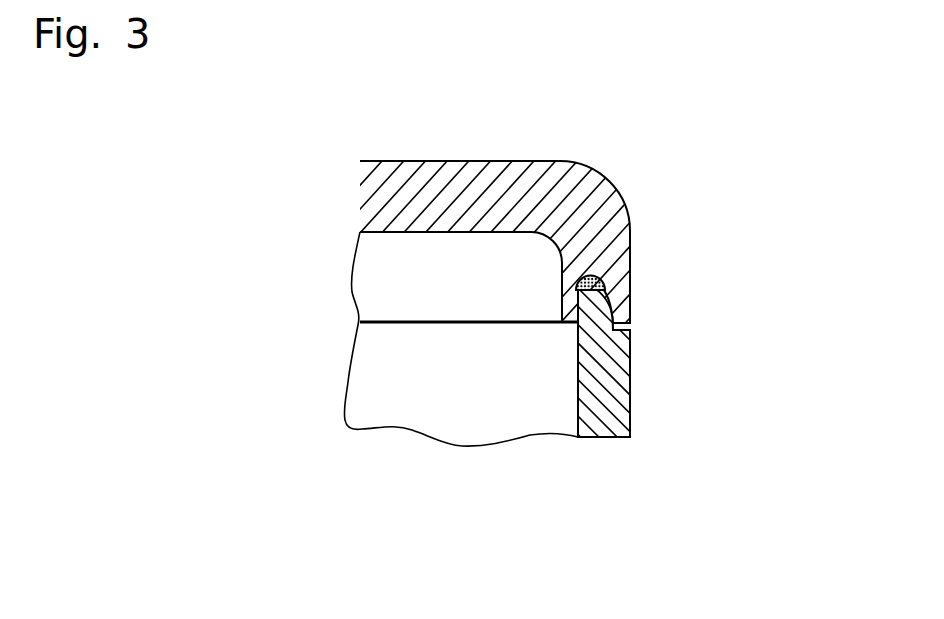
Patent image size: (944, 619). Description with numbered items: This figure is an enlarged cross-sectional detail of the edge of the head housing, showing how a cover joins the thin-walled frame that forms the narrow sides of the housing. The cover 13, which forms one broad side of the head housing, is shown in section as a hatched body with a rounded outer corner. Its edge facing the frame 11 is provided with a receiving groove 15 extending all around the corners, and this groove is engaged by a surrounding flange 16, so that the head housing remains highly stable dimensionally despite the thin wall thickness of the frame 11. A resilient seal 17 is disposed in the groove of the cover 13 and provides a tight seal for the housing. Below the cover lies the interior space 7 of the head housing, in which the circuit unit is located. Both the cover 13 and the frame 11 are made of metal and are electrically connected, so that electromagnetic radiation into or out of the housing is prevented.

The interior space 7 is at (455, 383).
The frame 11 is at (602, 418).
The cover 13 is at (455, 202).
The receiving groove 15 is at (630, 248).
The surrounding flange 16 is at (630, 373).
The resilient seal 17 is at (598, 283).